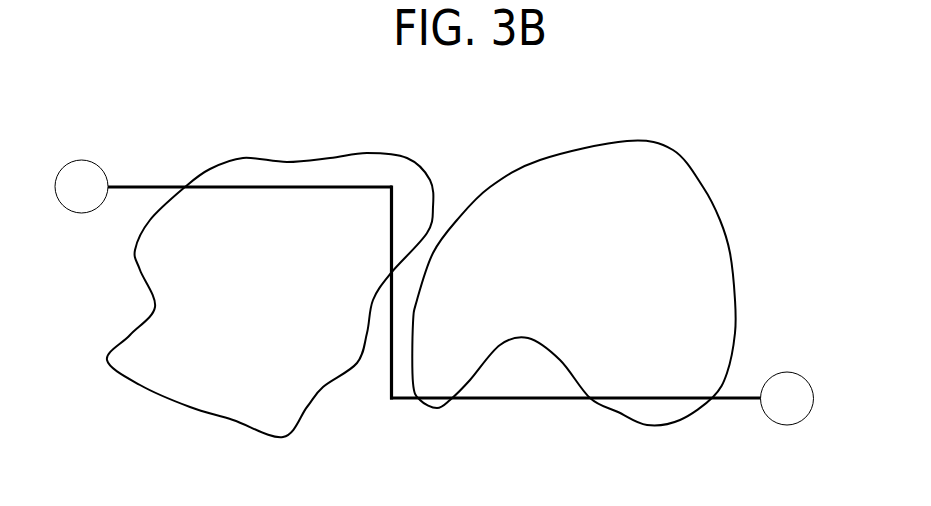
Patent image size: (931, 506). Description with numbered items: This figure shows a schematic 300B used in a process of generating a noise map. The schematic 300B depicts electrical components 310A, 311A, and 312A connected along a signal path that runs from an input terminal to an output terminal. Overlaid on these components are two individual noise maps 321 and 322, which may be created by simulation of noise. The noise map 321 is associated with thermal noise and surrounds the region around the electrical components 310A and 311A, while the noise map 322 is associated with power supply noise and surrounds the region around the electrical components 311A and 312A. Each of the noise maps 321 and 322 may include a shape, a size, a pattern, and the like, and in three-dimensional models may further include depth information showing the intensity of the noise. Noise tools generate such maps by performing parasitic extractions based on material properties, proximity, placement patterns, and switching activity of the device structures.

The schematic 300B is at (805, 68).
The electrical component 310A is at (140, 185).
The electrical component 311A is at (388, 377).
The electrical component 312A is at (495, 400).
The noise map 321 is at (270, 295).
The noise map 322 is at (574, 283).